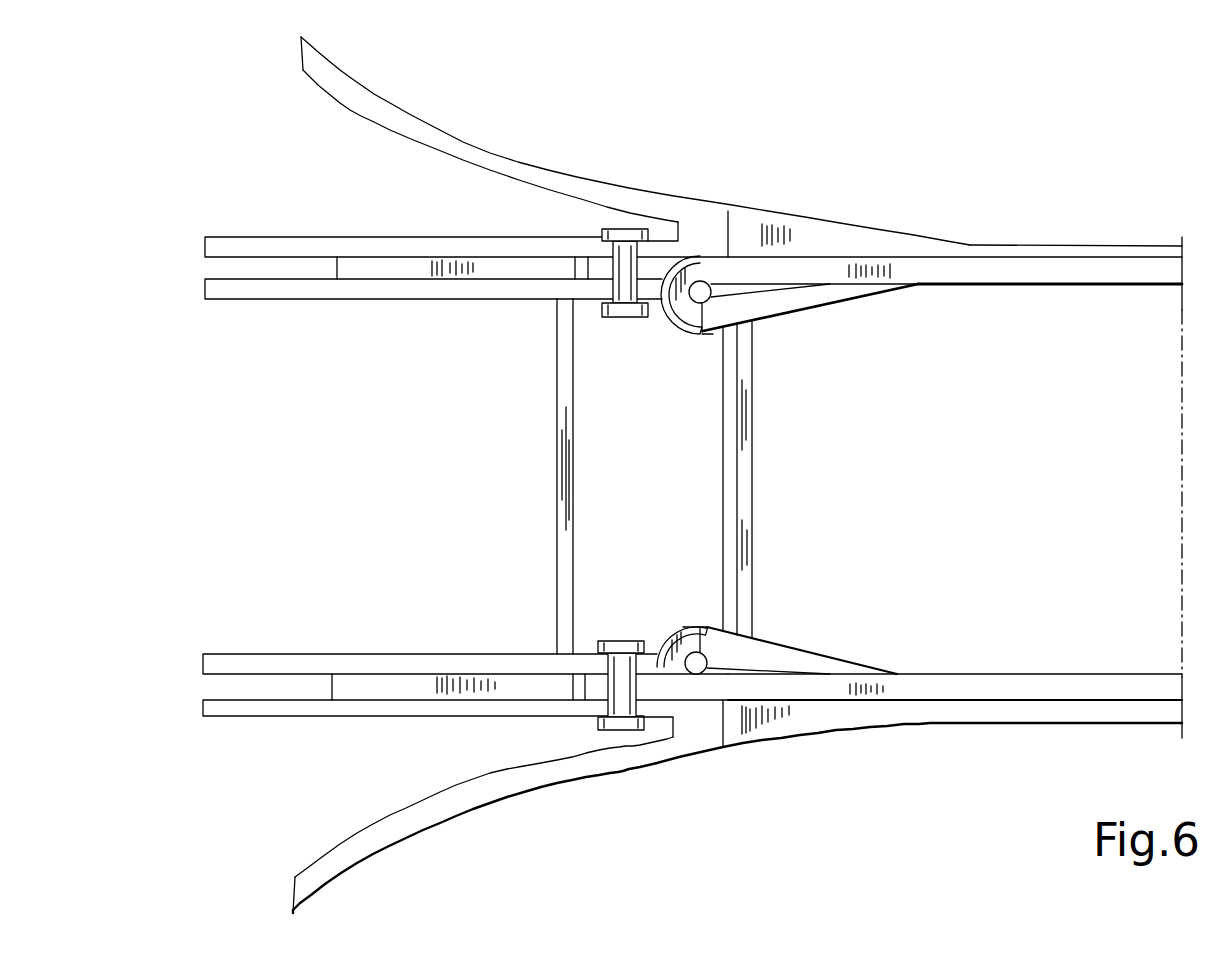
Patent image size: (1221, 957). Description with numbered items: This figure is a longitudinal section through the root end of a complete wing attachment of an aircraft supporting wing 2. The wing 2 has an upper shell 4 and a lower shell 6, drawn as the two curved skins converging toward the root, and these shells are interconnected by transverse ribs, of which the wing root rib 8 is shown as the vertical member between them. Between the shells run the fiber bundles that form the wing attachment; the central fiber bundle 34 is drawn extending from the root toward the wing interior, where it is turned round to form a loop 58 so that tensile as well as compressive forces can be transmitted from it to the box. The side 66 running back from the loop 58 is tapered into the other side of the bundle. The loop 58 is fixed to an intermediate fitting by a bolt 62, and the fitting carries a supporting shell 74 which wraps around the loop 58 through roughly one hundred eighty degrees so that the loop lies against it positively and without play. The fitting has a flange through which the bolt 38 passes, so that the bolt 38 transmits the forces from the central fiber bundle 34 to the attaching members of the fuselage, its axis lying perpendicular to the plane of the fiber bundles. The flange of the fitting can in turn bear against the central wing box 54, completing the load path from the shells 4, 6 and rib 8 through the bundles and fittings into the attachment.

The wing 2 is at (1091, 222).
The upper shell 4 is at (1142, 252).
The lower shell 6 is at (929, 716).
The wing root rib 8 is at (742, 483).
The central fiber bundle 34 is at (977, 275).
The bolt 38 is at (623, 312).
The central wing box 54 is at (450, 494).
The loop 58 is at (683, 313).
The bolt 62 is at (700, 290).
The running-back side 66 is at (793, 305).
The supporting shell 74 is at (700, 313).